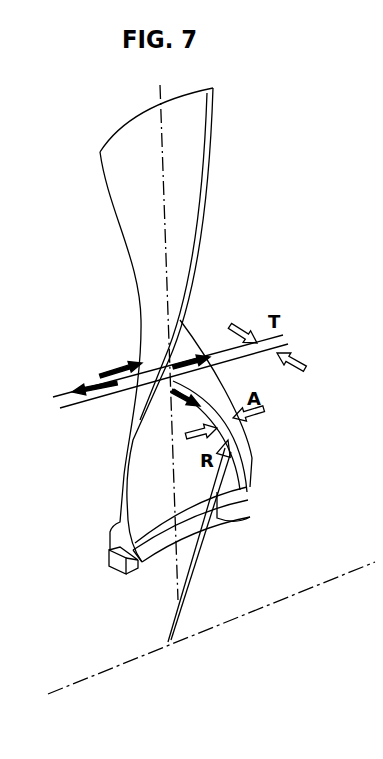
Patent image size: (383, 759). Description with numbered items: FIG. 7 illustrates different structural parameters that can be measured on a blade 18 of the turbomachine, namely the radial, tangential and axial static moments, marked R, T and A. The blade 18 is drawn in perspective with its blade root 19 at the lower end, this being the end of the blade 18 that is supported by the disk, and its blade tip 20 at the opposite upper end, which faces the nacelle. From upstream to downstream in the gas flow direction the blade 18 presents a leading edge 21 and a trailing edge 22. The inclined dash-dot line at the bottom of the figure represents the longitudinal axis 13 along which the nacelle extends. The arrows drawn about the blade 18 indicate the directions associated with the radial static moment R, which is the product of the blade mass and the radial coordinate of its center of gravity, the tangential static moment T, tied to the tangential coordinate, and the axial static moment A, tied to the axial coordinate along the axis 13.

The longitudinal axis 13 is at (95, 673).
The blade 18 is at (253, 280).
The blade root 19 is at (238, 493).
The blade tip 20 is at (186, 171).
The leading edge 21 is at (123, 476).
The trailing edge 22 is at (250, 474).